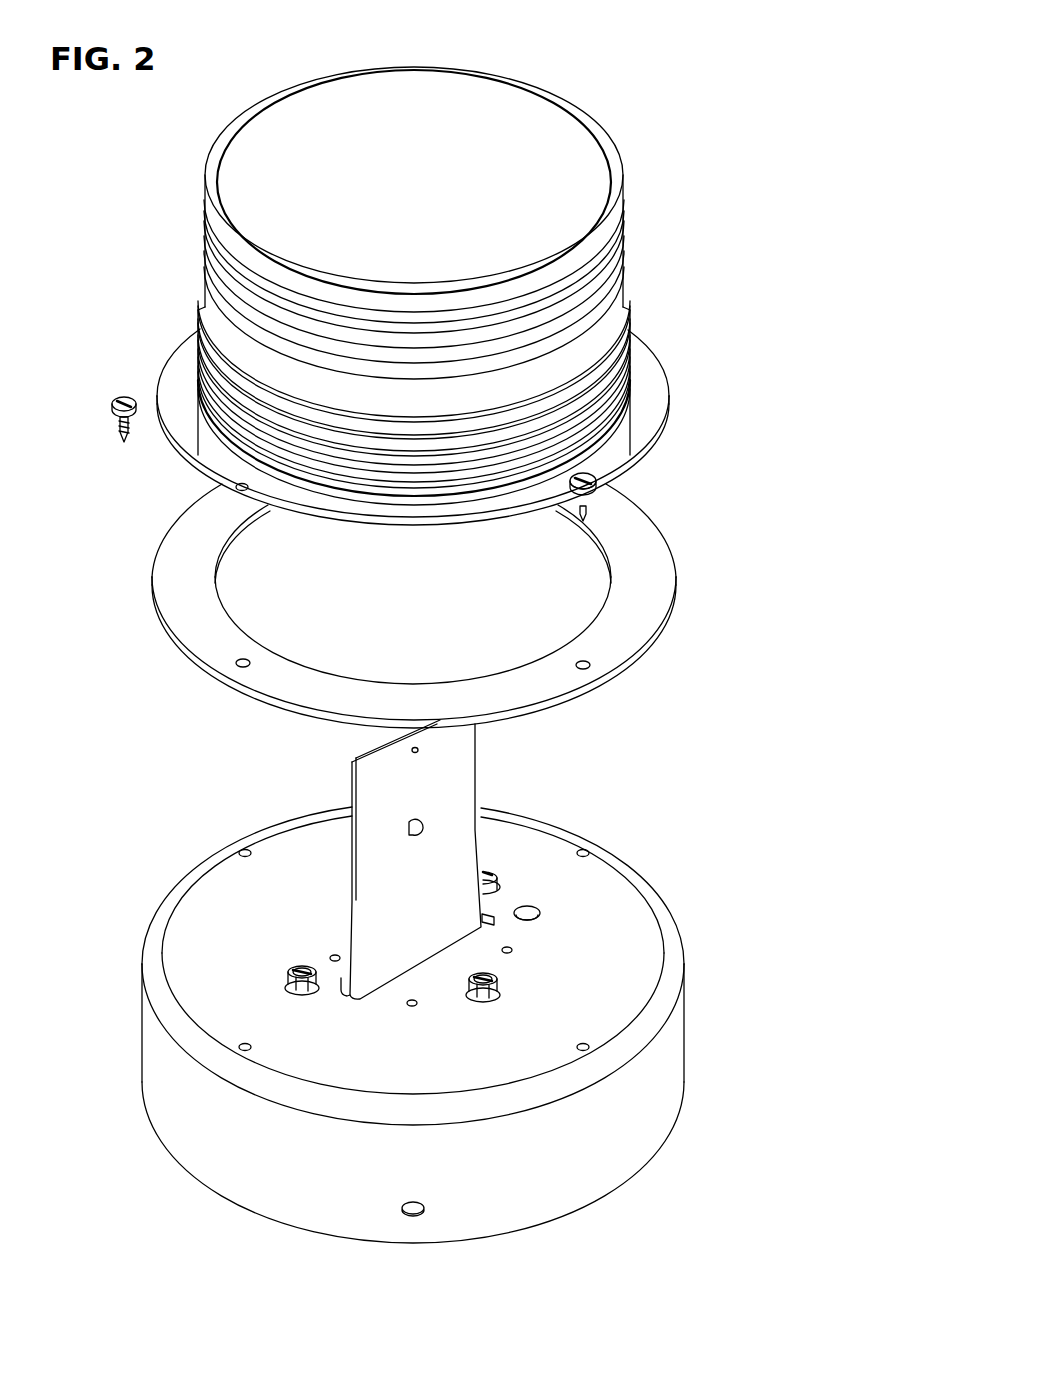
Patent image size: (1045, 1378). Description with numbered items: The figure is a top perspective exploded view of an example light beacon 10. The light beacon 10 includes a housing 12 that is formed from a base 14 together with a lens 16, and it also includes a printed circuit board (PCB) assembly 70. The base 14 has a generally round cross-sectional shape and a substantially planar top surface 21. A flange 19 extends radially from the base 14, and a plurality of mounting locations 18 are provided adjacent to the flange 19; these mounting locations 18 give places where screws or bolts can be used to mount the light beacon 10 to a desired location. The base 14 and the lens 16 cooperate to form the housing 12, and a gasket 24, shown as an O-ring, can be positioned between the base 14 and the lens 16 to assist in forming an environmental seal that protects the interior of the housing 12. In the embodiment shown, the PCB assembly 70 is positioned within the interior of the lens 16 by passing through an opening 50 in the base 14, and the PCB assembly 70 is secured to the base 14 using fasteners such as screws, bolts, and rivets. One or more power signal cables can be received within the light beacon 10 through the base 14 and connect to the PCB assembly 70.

The light beacon 10 is at (683, 85).
The housing 12 is at (665, 332).
The base 14 is at (141, 1046).
The lens 16 is at (203, 168).
The mounting locations 18 is at (417, 1216).
The flange 19 is at (153, 953).
The top surface 21 is at (641, 926).
The gasket 24 is at (628, 632).
The opening 50 is at (490, 923).
The printed circuit board assembly 70 is at (475, 777).